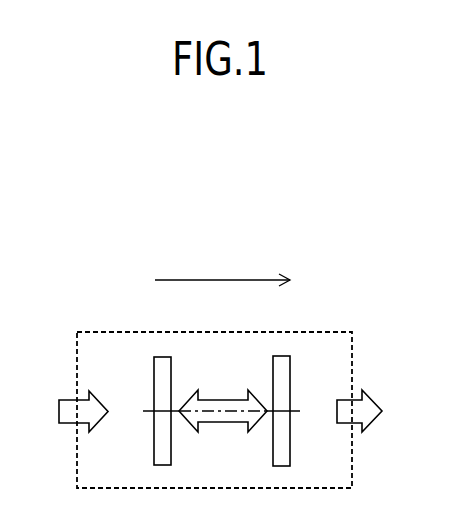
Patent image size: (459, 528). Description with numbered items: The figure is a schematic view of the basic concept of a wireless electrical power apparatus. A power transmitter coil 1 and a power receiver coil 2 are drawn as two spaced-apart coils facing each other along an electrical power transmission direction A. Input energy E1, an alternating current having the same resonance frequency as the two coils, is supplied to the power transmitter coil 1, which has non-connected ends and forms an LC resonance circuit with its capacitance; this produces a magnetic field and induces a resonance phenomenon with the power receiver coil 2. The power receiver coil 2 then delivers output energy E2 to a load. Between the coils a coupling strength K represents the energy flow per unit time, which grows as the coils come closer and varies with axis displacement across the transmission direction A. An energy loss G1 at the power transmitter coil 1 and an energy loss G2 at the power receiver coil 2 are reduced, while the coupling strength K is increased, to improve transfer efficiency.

The power transmitter coil 1 is at (165, 357).
The power receiver coil 2 is at (284, 356).
The electrical power transmission direction A is at (222, 270).
The coupling strength K is at (223, 426).
The input energy E1 is at (69, 411).
The output energy E2 is at (376, 411).
The energy loss of power transmitter coil G1 is at (131, 413).
The energy loss of power receiver coil G2 is at (321, 413).